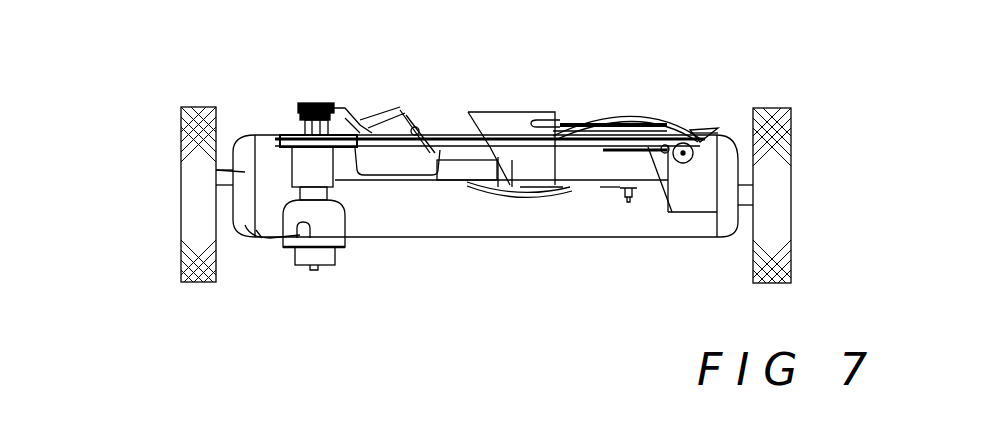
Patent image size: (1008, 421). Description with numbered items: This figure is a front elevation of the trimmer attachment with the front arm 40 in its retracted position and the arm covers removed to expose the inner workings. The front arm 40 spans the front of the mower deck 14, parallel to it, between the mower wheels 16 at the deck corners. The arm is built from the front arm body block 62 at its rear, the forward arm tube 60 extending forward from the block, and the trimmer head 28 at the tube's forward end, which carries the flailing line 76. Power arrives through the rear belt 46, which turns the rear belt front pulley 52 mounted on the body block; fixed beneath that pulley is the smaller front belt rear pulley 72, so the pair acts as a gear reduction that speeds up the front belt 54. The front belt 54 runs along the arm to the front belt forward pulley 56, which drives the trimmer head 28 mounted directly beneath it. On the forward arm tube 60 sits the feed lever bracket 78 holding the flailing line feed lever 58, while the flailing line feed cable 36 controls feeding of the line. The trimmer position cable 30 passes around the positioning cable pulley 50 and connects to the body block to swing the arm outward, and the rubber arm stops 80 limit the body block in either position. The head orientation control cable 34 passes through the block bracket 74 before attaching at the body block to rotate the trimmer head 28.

The mower deck 14 is at (245, 172).
The mower wheels 16 is at (180, 107).
The trimmer head 28 is at (340, 268).
The trimmer position cable 30 is at (718, 133).
The head orientation control cable 34 is at (647, 107).
The flailing line feed cable 36 is at (512, 185).
The front arm 40 is at (250, 113).
The rear belt 46 is at (584, 112).
The positioning cable pulley 50 is at (720, 118).
The rear belt front pulley 52 is at (668, 118).
The front belt 54 is at (440, 135).
The front belt forward pulley 56 is at (283, 118).
The flailing line feed lever 58 is at (347, 107).
The forward arm tube 60 is at (467, 173).
The front arm body block 62 is at (597, 177).
The front belt rear pulley 72 is at (650, 150).
The block bracket 74 is at (512, 115).
The flailing line 76 is at (270, 240).
The feed lever bracket 78 is at (392, 162).
The rubber arm stops 80 is at (700, 157).